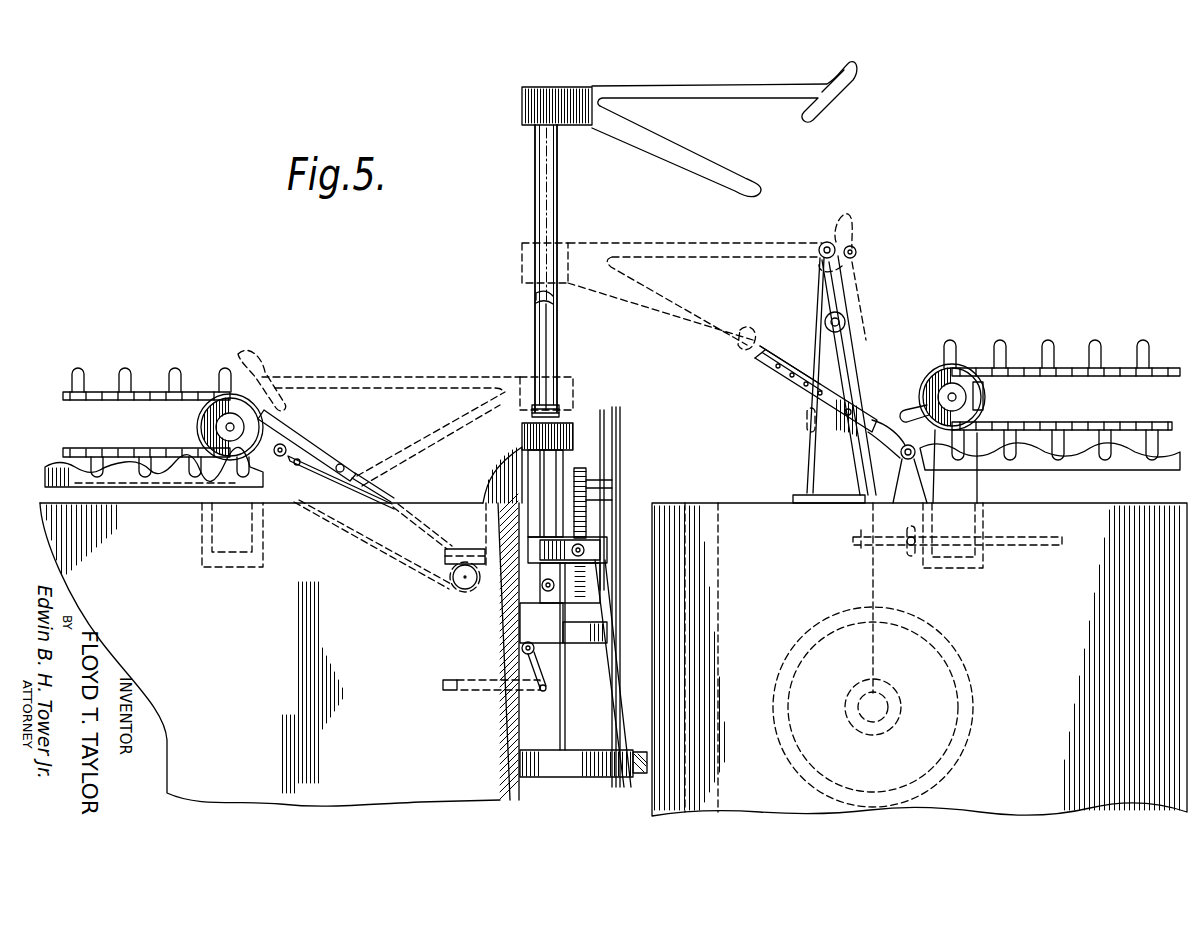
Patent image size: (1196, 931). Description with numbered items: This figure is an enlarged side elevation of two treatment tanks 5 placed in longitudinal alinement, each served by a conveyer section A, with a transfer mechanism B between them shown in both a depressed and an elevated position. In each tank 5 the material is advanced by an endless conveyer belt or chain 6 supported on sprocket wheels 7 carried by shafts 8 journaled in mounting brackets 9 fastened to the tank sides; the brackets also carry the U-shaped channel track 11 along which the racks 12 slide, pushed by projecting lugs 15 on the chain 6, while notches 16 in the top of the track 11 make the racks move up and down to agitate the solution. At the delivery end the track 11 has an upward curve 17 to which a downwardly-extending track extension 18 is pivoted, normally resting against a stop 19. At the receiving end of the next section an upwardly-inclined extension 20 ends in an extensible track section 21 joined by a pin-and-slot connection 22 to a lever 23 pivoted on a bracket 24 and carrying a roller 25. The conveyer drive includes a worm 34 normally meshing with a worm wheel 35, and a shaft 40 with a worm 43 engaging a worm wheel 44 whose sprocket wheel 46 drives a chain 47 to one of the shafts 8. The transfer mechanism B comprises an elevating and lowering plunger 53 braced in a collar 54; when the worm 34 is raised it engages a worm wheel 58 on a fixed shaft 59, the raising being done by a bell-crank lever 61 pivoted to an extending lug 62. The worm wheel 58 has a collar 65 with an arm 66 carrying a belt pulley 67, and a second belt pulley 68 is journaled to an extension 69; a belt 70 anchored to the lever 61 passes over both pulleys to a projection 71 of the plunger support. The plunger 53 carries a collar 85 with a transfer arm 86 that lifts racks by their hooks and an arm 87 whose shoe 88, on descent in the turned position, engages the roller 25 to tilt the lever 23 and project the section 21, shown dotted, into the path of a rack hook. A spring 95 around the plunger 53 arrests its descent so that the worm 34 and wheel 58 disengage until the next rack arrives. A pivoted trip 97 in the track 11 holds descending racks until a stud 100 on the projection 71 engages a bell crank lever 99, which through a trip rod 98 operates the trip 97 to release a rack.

The tank 5 is at (443, 502).
The endless conveyer belt or chain 6 is at (192, 392).
The sprocket wheel 7 is at (212, 411).
The shaft 8 is at (225, 428).
The mounting bracket 9 is at (237, 550).
The U-shaped channel track 11 is at (127, 488).
The rack 12 is at (868, 513).
The projecting lug 15 is at (82, 380).
The notch 16 is at (193, 480).
The upward curve 17 is at (285, 434).
The track extension 18 is at (323, 453).
The stop 19 is at (296, 464).
The upwardly-inclined extension 20 is at (792, 382).
The extensible track section 21 is at (795, 353).
The pin-and-slot connection 22 is at (848, 392).
The lever 23 is at (857, 276).
The bracket 24 is at (810, 447).
The roller 25 is at (858, 249).
The worm 34 is at (587, 537).
The worm wheel 35 is at (600, 568).
The shaft 40 is at (478, 549).
The worm 43 is at (455, 548).
The worm wheel 44 is at (455, 589).
The sprocket wheel 46 is at (463, 597).
The chain 47 is at (368, 543).
The elevating and lowering plunger 53 is at (559, 194).
The collar 54 is at (573, 425).
The worm wheel 58 is at (597, 487).
The fixed shaft 59 is at (587, 467).
The bell-crank lever 61 is at (590, 545).
The extending lug 62 is at (502, 582).
The collar 65 is at (600, 497).
The arm 66 is at (563, 487).
The belt pulley 67 is at (597, 430).
The second belt pulley 68 is at (630, 748).
The extension 69 is at (593, 779).
The belt 70 is at (615, 640).
The projection 71 is at (583, 643).
The collar 85 is at (522, 104).
The arm 86 is at (690, 168).
The arm 87 is at (724, 96).
The shoe 88 is at (854, 80).
The spring 95 is at (566, 417).
The pivoted trip 97 is at (878, 428).
The trip rod 98 is at (453, 692).
The bell crank lever 99 is at (545, 673).
The stud 100 is at (602, 644).
The conveyer section A is at (604, 412).
The transfer mechanism B is at (554, 326).